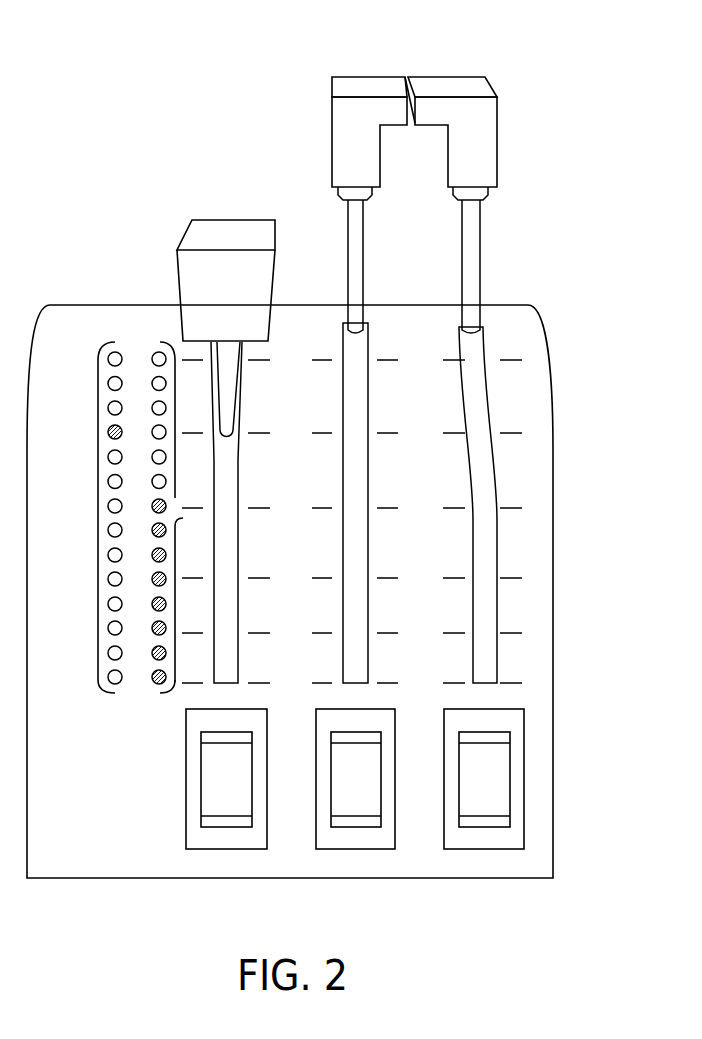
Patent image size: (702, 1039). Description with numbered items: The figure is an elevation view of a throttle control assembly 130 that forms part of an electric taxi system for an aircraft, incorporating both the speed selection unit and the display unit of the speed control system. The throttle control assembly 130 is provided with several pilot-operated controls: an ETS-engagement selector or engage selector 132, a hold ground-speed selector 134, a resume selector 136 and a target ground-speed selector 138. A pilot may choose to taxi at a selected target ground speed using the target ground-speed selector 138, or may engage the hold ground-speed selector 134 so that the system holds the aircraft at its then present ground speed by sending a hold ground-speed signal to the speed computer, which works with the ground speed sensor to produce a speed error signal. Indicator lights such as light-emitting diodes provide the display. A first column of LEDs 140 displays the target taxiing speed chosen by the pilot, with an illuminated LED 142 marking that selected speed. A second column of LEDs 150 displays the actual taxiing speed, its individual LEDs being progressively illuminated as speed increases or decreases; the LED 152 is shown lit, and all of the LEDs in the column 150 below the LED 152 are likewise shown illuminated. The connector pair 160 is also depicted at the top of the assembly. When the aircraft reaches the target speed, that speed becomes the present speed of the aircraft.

The throttle control assembly 130 is at (548, 482).
The engage selector 132 is at (225, 827).
The hold ground-speed selector 134 is at (350, 827).
The resume selector 136 is at (482, 827).
The target ground-speed selector 138 is at (228, 230).
The first column of LEDs 140 is at (98, 500).
The illuminated LED 142 is at (108, 432).
The second column of LEDs 150 is at (183, 518).
The LED 152 is at (168, 505).
The connector pair 160 is at (510, 65).